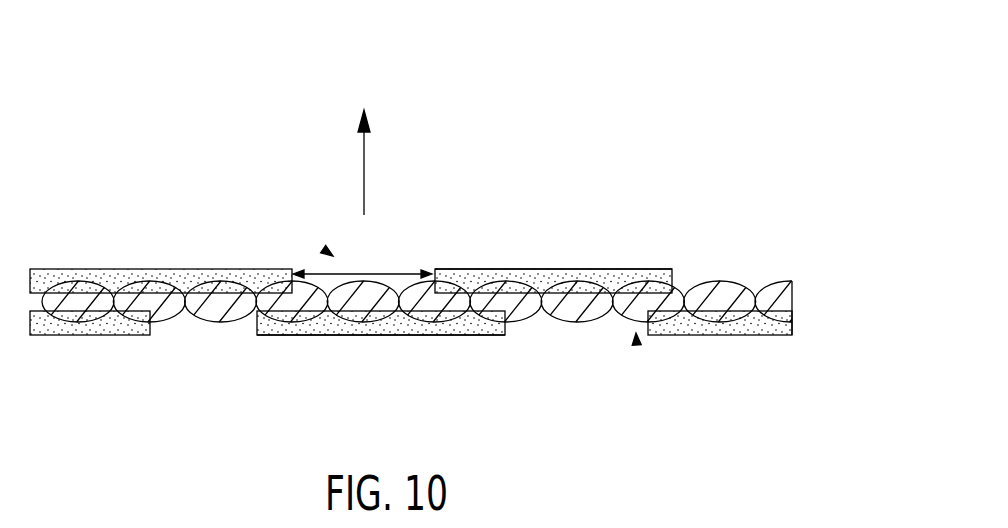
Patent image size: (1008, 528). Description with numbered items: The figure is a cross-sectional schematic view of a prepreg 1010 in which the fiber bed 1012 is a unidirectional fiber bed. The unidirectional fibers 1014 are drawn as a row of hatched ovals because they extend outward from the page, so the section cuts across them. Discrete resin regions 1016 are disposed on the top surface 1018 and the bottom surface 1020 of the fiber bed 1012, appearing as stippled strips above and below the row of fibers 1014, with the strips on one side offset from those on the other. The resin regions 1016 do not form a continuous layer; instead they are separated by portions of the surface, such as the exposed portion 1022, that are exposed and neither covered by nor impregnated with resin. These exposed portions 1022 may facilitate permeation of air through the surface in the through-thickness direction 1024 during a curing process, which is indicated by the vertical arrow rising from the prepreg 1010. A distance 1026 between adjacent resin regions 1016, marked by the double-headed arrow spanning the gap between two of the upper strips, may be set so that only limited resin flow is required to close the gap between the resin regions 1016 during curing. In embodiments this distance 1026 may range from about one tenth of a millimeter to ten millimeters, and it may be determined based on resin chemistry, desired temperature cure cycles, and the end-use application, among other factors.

The prepreg 1010 is at (619, 102).
The fiber bed 1012 is at (730, 283).
The unidirectional fibers 1014 is at (677, 291).
The discrete resin regions 1016 is at (43, 268).
The top surface 1018 is at (503, 277).
The bottom surface 1020 is at (505, 326).
The exposed portion 1022 is at (325, 250).
The through-thickness direction 1024 is at (364, 171).
The distance 1026 is at (386, 271).